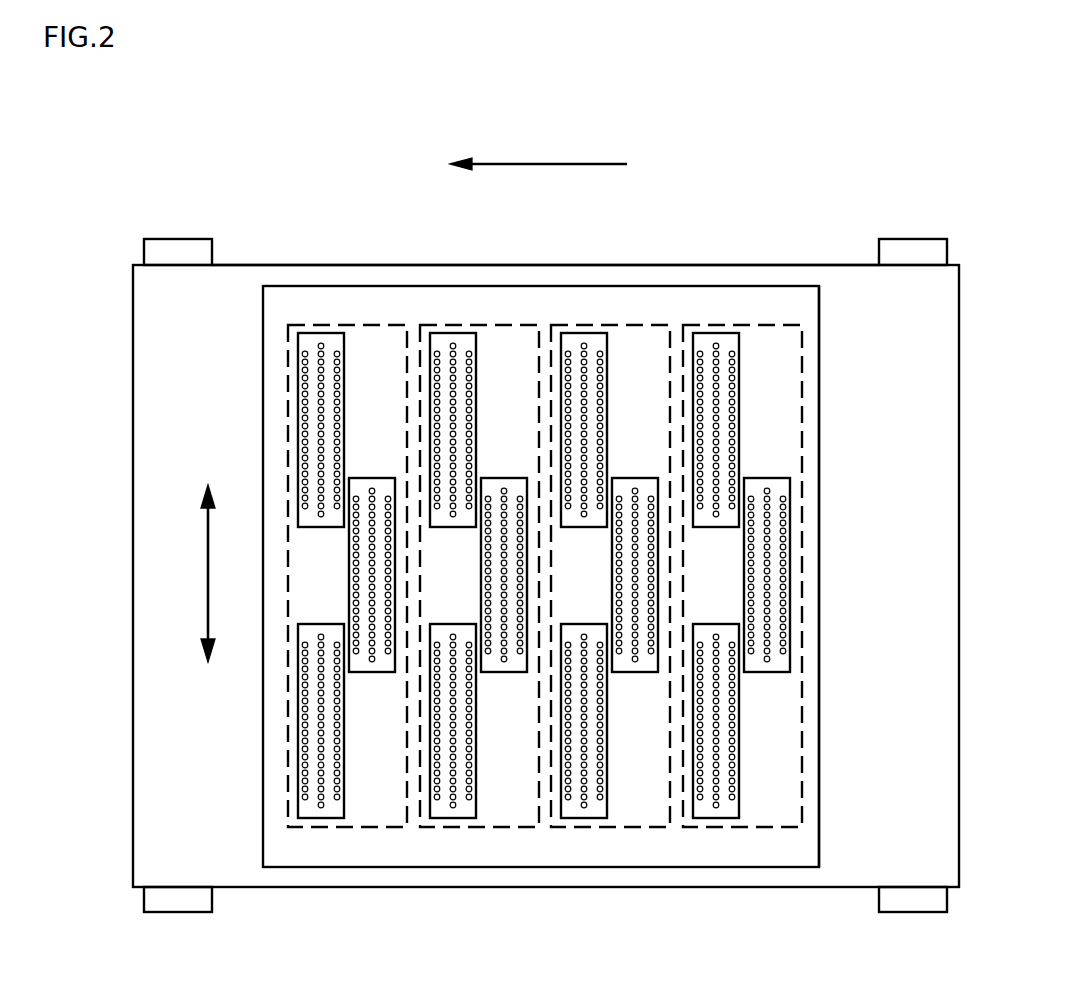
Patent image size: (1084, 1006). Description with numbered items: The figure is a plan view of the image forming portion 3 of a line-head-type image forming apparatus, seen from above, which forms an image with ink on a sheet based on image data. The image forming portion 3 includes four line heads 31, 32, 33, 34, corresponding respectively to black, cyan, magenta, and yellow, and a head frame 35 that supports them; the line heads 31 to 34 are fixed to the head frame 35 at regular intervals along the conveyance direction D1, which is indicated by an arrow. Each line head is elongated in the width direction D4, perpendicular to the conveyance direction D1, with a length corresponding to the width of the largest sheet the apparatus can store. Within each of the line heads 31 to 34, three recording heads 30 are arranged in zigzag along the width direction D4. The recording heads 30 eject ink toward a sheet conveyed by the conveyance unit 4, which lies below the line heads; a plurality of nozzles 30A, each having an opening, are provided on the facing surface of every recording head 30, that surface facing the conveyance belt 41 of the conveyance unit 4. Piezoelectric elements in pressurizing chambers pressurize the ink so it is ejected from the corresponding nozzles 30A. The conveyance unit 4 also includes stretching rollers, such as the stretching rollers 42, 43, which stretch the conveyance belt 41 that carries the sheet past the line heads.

The image forming portion 3 is at (316, 272).
The conveyance unit 4 is at (119, 244).
The recording head 30 is at (546, 575).
The nozzle 30A is at (546, 575).
The line head 31 is at (777, 311).
The line head 32 is at (651, 311).
The line head 33 is at (512, 311).
The line head 34 is at (387, 311).
The head frame 35 is at (819, 305).
The conveyance belt 41 is at (230, 265).
The stretching roller 42 is at (900, 239).
The stretching roller 43 is at (170, 239).
The conveyance direction D1 is at (531, 164).
The width direction D4 is at (208, 557).